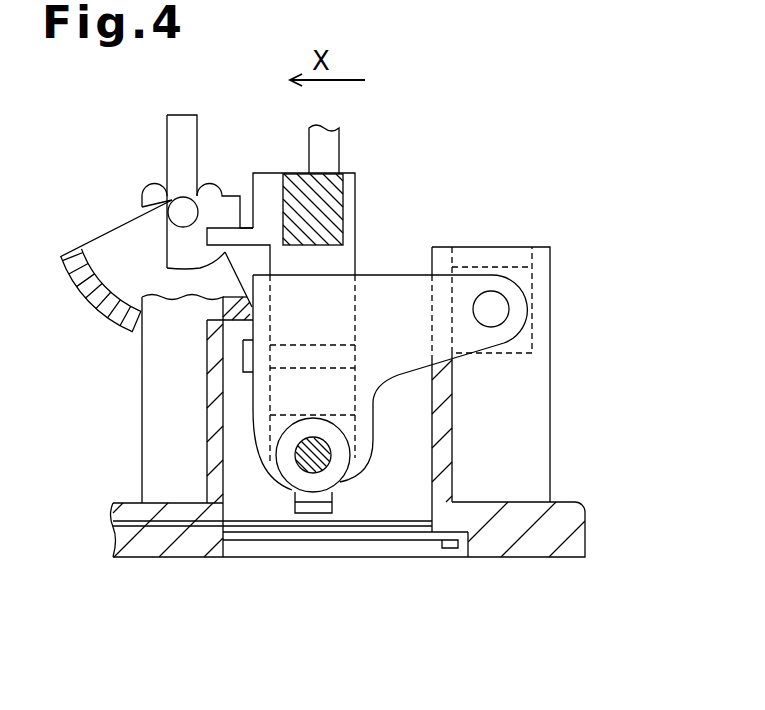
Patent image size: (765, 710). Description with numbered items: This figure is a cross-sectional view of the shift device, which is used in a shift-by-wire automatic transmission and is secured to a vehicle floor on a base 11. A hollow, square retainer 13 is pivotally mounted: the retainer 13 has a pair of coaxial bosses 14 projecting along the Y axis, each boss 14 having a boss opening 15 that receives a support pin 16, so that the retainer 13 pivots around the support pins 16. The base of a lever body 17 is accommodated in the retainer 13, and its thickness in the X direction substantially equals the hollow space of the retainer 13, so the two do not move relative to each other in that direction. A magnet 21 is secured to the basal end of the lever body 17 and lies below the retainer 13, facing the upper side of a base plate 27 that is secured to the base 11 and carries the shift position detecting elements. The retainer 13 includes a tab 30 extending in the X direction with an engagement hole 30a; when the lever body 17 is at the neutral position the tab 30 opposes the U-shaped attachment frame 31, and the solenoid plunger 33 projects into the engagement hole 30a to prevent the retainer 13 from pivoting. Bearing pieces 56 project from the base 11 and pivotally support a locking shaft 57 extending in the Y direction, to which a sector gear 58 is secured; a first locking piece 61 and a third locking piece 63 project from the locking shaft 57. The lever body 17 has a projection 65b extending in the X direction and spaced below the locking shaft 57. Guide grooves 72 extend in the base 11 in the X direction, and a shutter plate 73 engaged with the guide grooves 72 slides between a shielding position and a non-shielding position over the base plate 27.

The base 11 is at (575, 523).
The retainer 13 is at (393, 288).
The boss 14 is at (317, 427).
The boss opening 15 is at (305, 463).
The support pin 16 is at (327, 436).
The lever body 17 is at (357, 193).
The magnet 21 is at (332, 507).
The base plate 27 is at (383, 540).
The tab 30 is at (465, 285).
The engagement hole 30a is at (500, 303).
The attachment frame 31 is at (528, 460).
The plunger 33 is at (492, 317).
The bearing piece 56 is at (160, 383).
The locking shaft 57 is at (178, 213).
The sector gear 58 is at (98, 248).
The first locking piece 61 is at (175, 126).
The third locking piece 63 is at (230, 207).
The projection 65b is at (242, 240).
The guide groove 72 is at (417, 517).
The shutter plate 73 is at (122, 557).